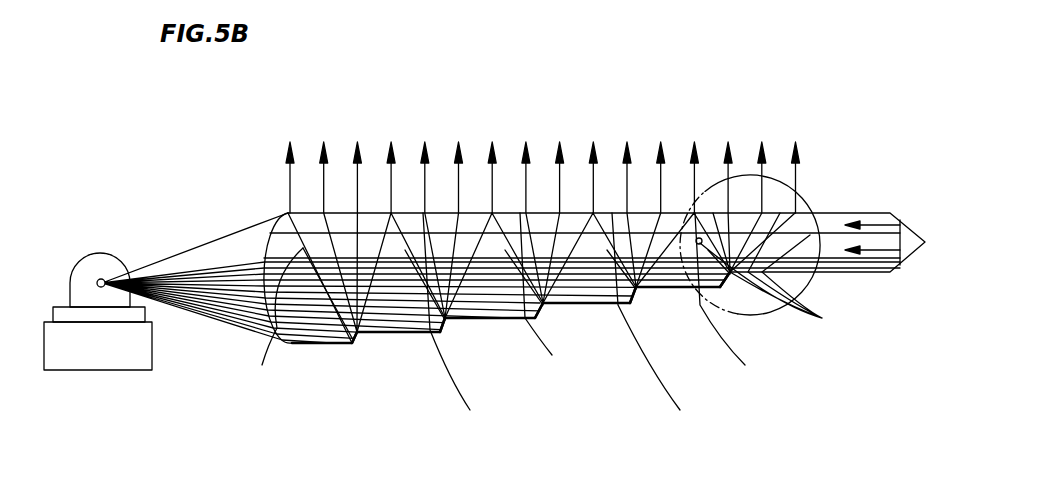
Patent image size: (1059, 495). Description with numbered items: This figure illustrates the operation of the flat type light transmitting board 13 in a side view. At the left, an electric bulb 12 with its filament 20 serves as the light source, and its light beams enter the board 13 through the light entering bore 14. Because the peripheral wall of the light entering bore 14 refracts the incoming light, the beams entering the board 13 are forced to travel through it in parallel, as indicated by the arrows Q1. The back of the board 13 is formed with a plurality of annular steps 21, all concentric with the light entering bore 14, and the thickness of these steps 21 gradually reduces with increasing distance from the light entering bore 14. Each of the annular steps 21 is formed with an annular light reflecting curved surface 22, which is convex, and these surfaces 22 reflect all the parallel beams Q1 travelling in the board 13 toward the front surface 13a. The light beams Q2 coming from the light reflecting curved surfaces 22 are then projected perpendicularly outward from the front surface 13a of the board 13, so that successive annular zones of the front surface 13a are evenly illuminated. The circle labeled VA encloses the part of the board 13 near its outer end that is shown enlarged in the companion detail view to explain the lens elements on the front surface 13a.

The electric bulb 12 is at (118, 262).
The circular light transmitting board 13 is at (828, 197).
The front surface 13a is at (574, 232).
The light entering bore 14 is at (283, 226).
The filament 20 is at (102, 279).
The annular steps 21 is at (322, 345).
The light reflecting curved surfaces 22 is at (355, 336).
The parallel light beams Q1 is at (343, 232).
The reflected light beams Q2 is at (554, 329).
The circle enclosing enlarged part VA is at (778, 176).